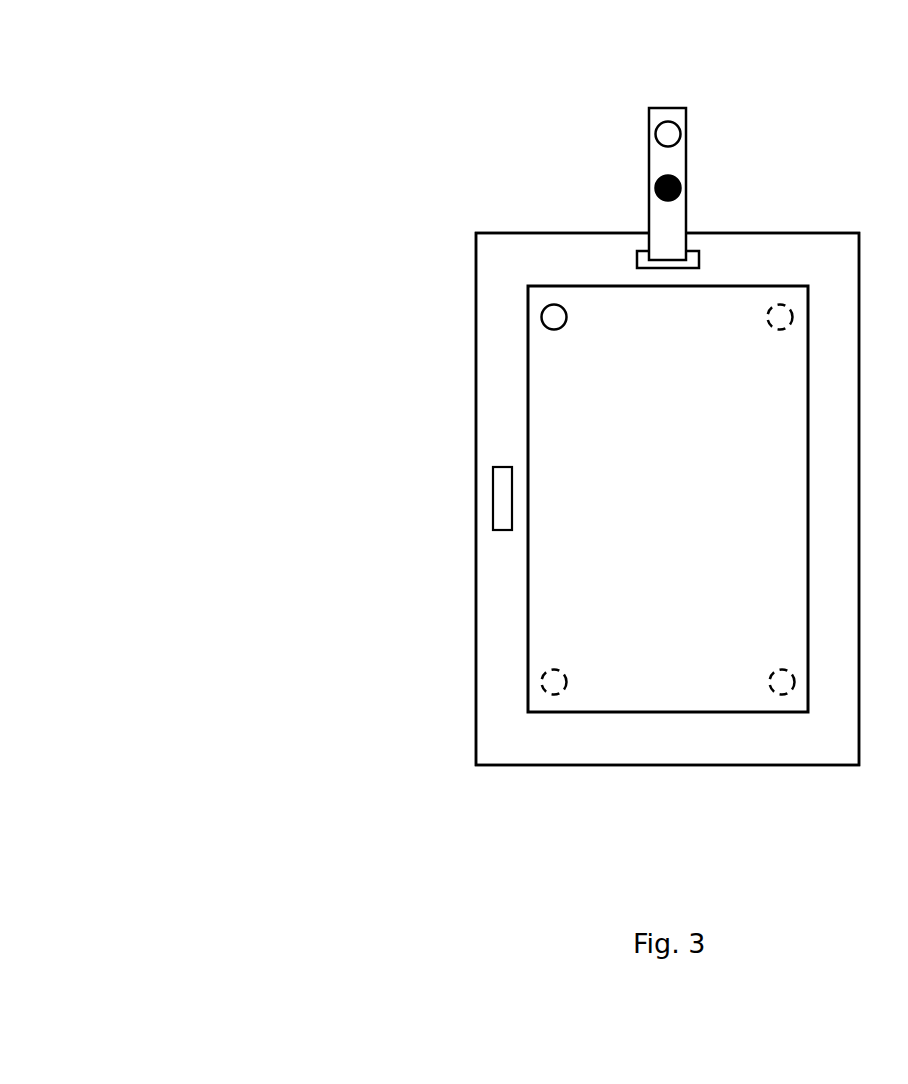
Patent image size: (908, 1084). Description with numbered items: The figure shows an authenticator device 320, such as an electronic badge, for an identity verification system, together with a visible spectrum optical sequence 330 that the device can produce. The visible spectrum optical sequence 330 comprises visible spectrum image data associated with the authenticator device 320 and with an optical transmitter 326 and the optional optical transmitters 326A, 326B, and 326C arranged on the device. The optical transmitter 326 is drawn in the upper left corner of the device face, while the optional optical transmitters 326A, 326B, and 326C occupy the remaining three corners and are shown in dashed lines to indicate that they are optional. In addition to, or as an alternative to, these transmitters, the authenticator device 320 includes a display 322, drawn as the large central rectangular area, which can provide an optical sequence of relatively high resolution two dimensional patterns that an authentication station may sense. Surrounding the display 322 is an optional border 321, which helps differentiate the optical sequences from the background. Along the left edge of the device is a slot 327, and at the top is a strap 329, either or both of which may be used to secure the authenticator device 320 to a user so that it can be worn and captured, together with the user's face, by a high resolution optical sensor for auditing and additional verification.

The visible spectrum optical sequence 330 is at (110, 109).
The authenticator device 320 is at (476, 272).
The border 321 is at (528, 758).
The display 322 is at (677, 698).
The strap 329 is at (686, 158).
The optical transmitter 326 is at (556, 330).
The optional optical transmitter 326A is at (780, 330).
The optional optical transmitter 326B is at (555, 670).
The optional optical transmitter 326C is at (777, 670).
The slot 327 is at (493, 498).